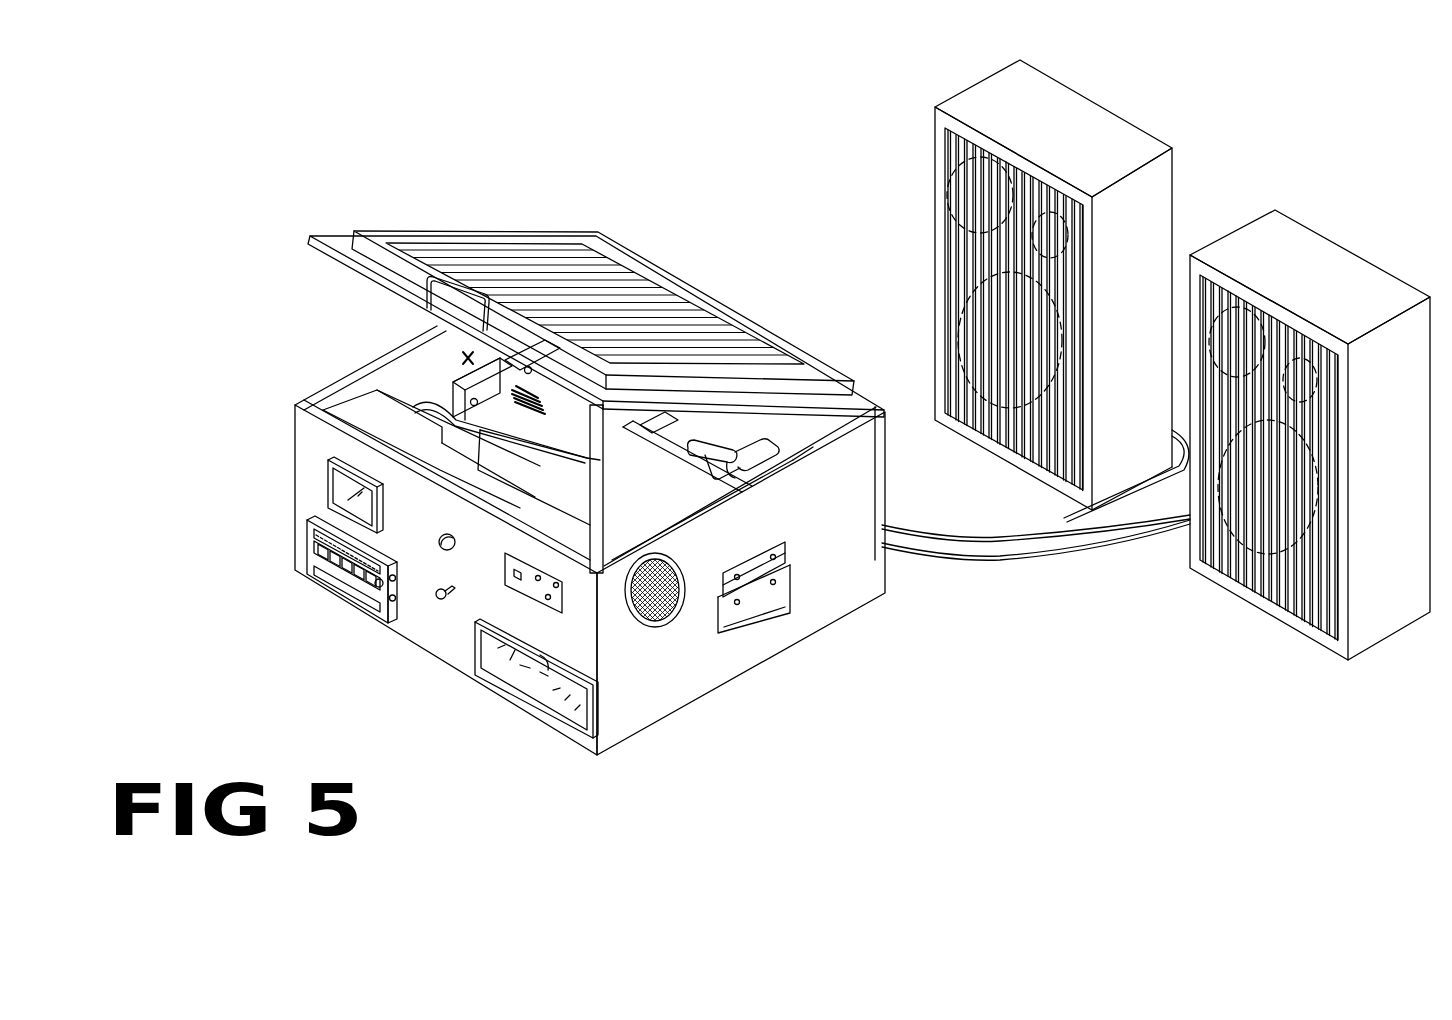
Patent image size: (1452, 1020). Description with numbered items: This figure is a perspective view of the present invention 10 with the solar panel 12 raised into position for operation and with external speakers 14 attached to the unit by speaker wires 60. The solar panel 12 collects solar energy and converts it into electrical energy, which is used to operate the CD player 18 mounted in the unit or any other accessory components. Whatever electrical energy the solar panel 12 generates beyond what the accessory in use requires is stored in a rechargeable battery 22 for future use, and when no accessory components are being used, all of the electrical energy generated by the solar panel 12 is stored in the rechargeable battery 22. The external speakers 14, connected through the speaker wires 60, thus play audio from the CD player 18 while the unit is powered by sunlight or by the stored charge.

The present invention 10 is at (757, 742).
The solar panel 12 is at (455, 232).
The external speakers 14 is at (1112, 115).
The CD player 18 is at (330, 590).
The rechargeable battery 22 is at (793, 447).
The speaker wires 60 is at (1007, 535).